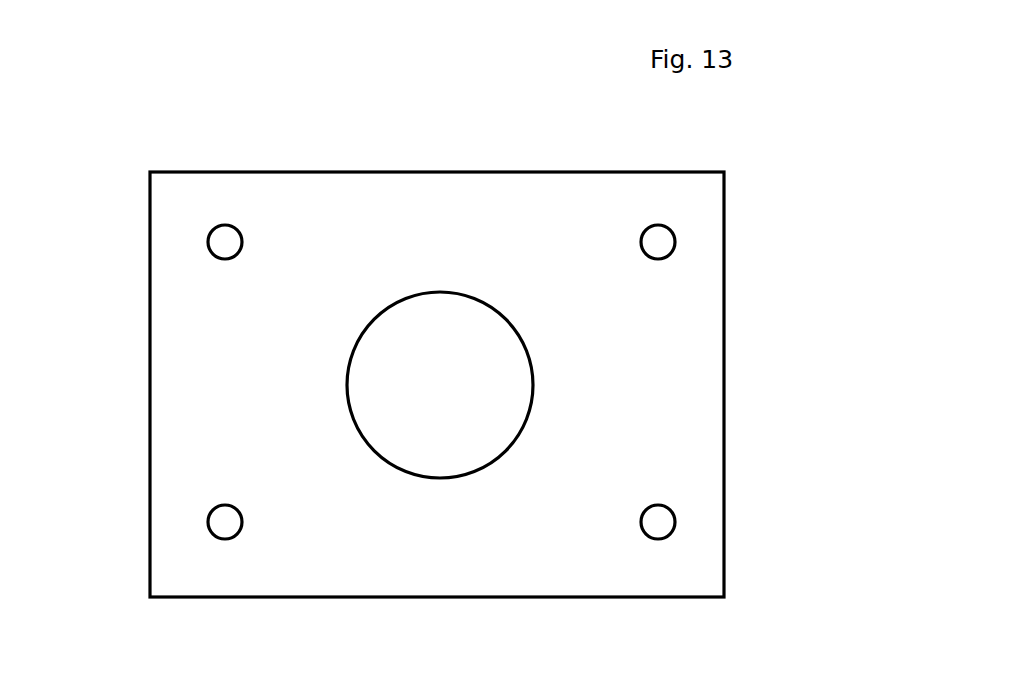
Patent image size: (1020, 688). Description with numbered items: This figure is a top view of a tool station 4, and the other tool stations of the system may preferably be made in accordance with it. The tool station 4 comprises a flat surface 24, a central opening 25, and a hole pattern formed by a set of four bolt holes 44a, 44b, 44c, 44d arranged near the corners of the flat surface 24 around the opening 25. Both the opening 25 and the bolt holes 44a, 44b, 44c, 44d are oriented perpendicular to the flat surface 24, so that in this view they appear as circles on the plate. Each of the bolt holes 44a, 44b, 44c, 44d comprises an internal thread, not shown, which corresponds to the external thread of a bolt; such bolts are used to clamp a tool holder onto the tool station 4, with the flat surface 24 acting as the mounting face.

The tool station 4 is at (152, 106).
The flat surface 24 is at (415, 210).
The opening 25 is at (487, 379).
The bolt hole 44a is at (225, 242).
The bolt hole 44b is at (225, 522).
The bolt hole 44c is at (658, 242).
The bolt hole 44d is at (658, 522).